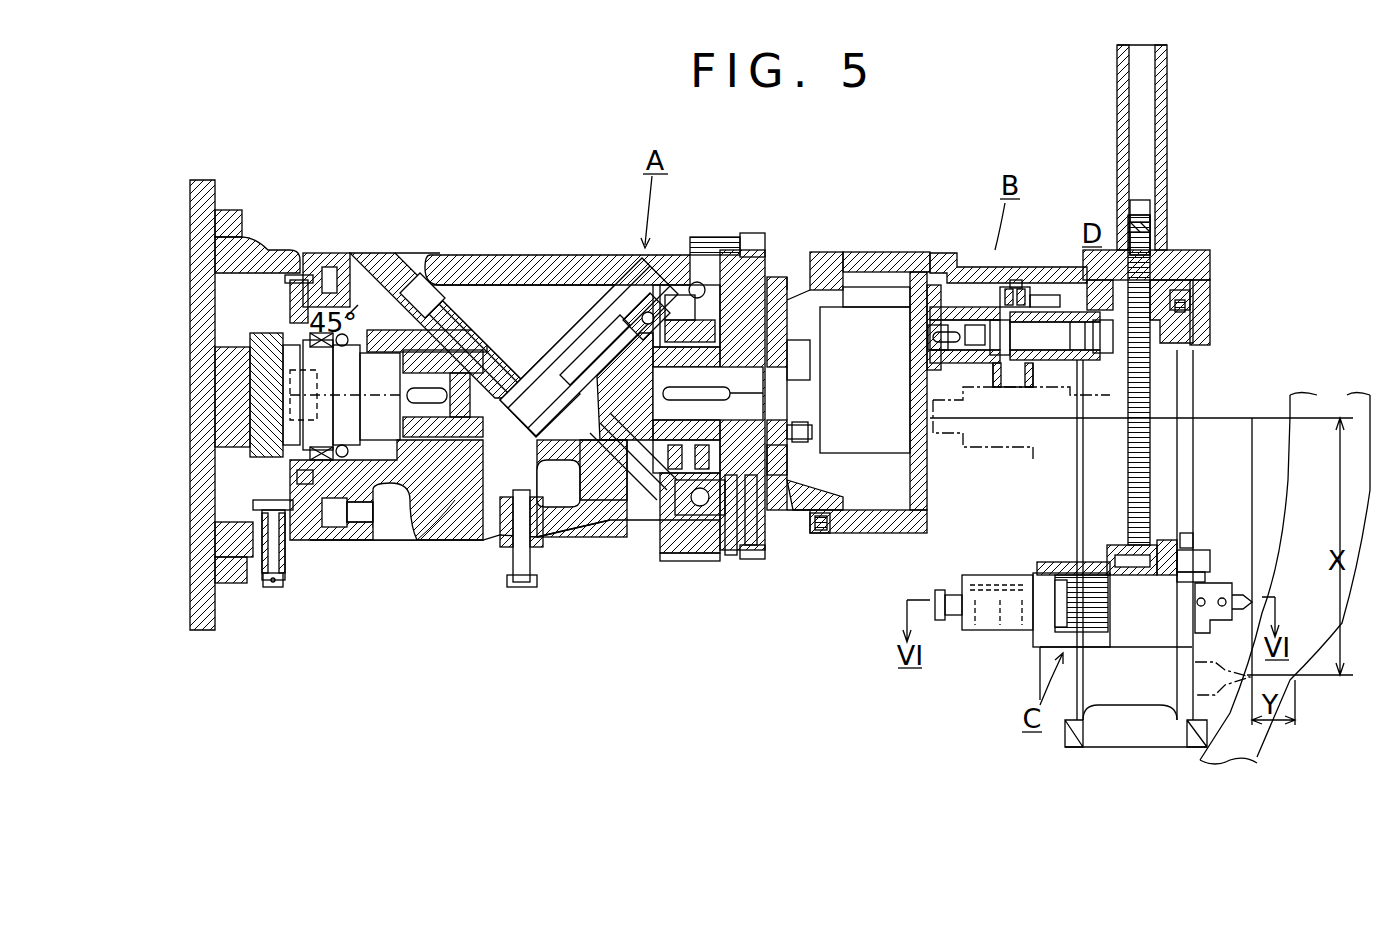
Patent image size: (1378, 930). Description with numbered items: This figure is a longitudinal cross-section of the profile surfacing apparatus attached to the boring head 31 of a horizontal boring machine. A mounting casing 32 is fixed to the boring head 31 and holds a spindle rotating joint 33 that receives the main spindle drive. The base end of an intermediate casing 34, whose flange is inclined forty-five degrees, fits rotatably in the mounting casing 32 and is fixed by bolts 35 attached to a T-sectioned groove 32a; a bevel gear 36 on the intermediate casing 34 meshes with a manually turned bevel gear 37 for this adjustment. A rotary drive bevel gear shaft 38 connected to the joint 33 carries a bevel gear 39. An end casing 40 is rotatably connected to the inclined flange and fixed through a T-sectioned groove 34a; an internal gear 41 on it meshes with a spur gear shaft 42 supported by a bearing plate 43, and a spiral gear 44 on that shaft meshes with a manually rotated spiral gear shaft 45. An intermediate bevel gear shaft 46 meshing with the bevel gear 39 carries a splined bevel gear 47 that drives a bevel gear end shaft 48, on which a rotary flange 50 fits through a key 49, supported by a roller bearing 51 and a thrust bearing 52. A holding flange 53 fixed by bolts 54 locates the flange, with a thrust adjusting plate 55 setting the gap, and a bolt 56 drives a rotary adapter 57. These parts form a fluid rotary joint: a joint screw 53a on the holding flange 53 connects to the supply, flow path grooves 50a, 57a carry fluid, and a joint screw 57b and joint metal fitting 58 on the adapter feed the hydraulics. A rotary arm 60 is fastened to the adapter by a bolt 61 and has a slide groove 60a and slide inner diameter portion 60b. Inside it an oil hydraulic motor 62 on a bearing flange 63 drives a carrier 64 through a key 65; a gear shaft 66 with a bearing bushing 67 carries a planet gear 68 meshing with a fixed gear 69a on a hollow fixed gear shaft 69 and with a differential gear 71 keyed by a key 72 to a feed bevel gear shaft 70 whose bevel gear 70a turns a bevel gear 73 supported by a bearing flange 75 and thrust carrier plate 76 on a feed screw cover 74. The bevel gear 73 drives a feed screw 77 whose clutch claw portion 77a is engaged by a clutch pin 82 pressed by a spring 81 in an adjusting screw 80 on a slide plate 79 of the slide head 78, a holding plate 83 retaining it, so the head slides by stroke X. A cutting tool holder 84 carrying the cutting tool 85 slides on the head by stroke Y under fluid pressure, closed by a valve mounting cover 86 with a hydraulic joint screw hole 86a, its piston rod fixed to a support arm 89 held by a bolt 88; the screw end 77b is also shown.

The boring head 31 is at (200, 182).
The mounting casing 32 is at (236, 212).
The T-sectioned groove 32a is at (327, 268).
The spindle rotating joint 33 is at (262, 333).
The intermediate casing 34 is at (365, 262).
The T-sectioned groove 34a is at (605, 520).
The bolts 35 is at (362, 512).
The bevel gear 36 is at (298, 283).
The bevel gear 37 is at (287, 548).
The rotary drive bevel gear shaft 38 is at (390, 462).
The bevel gear 39 is at (512, 347).
The end casing 40 is at (548, 255).
The internal gear 41 is at (488, 322).
The spur gear shaft 42 is at (570, 462).
The bearing plate 43 is at (588, 508).
The spiral gear 44 is at (562, 512).
The spiral gear shaft 45 is at (517, 585).
The intermediate bevel gear shaft 46 is at (448, 515).
The bevel gear 47 is at (585, 275).
The bevel gear end shaft 48 is at (583, 383).
The key 49 is at (745, 400).
The rotary flange 50 is at (705, 255).
The flow path grooves 50a is at (718, 550).
The roller bearing 51 is at (668, 455).
The thrust bearing 52 is at (680, 495).
The holding flange 53 is at (748, 237).
The joint screw 53a is at (766, 553).
The bolts 54 is at (768, 243).
The thrust adjusting plate 55 is at (693, 513).
The bolt 56 is at (790, 365).
The rotary adapter 57 is at (820, 252).
The flow path grooves 57a is at (790, 460).
The joint screw 57b is at (800, 483).
The joint metal fitting 58 is at (808, 432).
The rotary arm 60 is at (875, 252).
The slide groove 60a is at (1183, 470).
The slide inner diameter portion 60b is at (1163, 495).
The bolt 61 is at (818, 535).
The oil hydraulic motor 62 is at (890, 310).
The bearing flange 63 is at (940, 278).
The carrier 64 is at (970, 290).
The key 65 is at (933, 333).
The gear shaft 66 is at (1005, 295).
The bearing bushing 67 is at (1020, 290).
The planet gear 68 is at (1049, 286).
The fixed gear shaft 69 is at (1040, 362).
The fixed gear 69a is at (1015, 372).
The feed bevel gear shaft 70 is at (1072, 350).
The bevel gear 70a is at (1153, 373).
The differential gear 71 is at (1000, 375).
The key 72 is at (965, 372).
The bevel gear 73 is at (1180, 343).
The feed screw cover 74 is at (1185, 252).
The bearing flange 75 is at (1210, 310).
The thrust carrier plate 76 is at (1210, 272).
The feed screw 77 is at (1157, 397).
The clutch claw portion 77a is at (1135, 562).
The screw end 77b is at (1150, 217).
The slide head 78 is at (1142, 648).
The slide plate 79 is at (1200, 572).
The adjusting screw 80 is at (1205, 555).
The spring 81 is at (1195, 532).
The clutch pin 82 is at (1170, 540).
The holding plate 83 is at (1107, 548).
The cutting tool holder 84 is at (1220, 630).
The cutting tool 85 is at (1252, 603).
The valve mounting cover 86 is at (980, 577).
The hydraulic joint screw hole 86a is at (1015, 632).
The bolt 88 is at (1040, 562).
The support arm 89 is at (1060, 632).